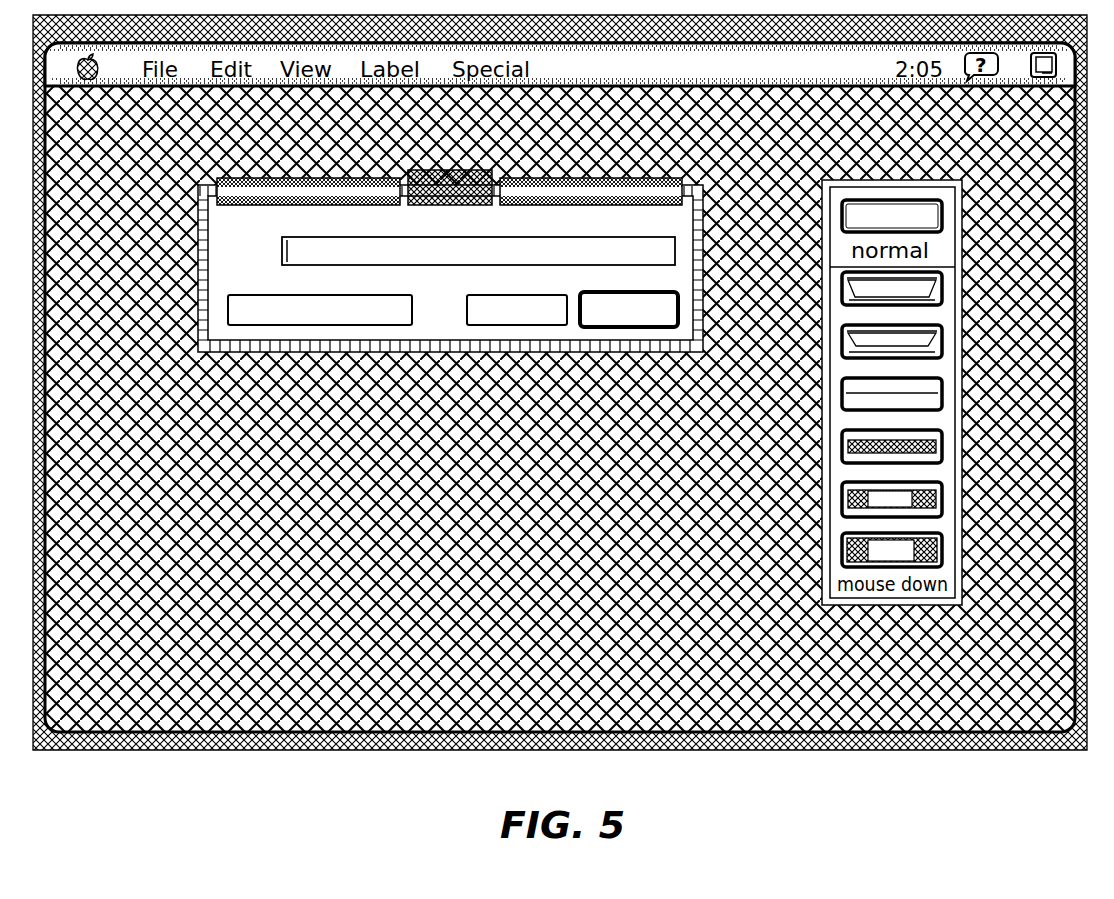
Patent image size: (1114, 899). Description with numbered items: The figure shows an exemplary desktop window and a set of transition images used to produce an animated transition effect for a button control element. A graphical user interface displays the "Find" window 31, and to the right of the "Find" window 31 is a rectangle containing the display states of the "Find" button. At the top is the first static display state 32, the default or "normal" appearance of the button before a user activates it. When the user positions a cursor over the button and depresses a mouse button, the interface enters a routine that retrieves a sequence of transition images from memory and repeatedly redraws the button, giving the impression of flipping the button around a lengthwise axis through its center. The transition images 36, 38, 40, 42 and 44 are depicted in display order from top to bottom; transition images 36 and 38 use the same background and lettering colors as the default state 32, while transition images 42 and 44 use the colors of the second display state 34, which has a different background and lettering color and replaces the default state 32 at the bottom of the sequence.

The Find window 31 is at (295, 174).
The first static display state 32 is at (942, 216).
The second display state 34 is at (942, 548).
The transition image 36 is at (942, 291).
The transition image 38 is at (942, 342).
The transition image 40 is at (942, 398).
The transition image 42 is at (942, 441).
The transition image 44 is at (942, 495).